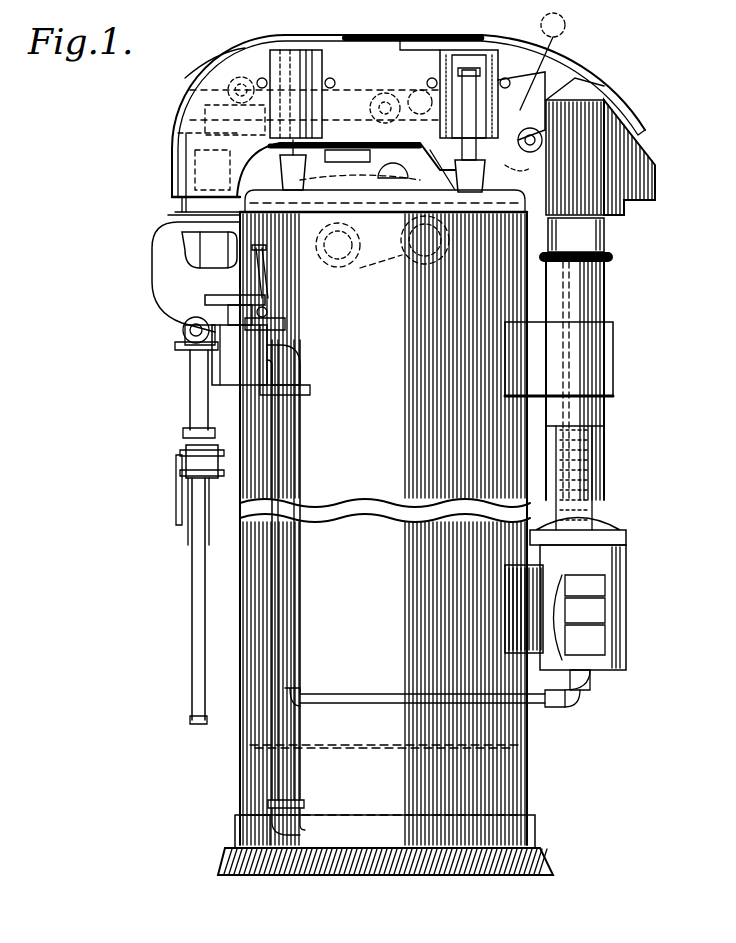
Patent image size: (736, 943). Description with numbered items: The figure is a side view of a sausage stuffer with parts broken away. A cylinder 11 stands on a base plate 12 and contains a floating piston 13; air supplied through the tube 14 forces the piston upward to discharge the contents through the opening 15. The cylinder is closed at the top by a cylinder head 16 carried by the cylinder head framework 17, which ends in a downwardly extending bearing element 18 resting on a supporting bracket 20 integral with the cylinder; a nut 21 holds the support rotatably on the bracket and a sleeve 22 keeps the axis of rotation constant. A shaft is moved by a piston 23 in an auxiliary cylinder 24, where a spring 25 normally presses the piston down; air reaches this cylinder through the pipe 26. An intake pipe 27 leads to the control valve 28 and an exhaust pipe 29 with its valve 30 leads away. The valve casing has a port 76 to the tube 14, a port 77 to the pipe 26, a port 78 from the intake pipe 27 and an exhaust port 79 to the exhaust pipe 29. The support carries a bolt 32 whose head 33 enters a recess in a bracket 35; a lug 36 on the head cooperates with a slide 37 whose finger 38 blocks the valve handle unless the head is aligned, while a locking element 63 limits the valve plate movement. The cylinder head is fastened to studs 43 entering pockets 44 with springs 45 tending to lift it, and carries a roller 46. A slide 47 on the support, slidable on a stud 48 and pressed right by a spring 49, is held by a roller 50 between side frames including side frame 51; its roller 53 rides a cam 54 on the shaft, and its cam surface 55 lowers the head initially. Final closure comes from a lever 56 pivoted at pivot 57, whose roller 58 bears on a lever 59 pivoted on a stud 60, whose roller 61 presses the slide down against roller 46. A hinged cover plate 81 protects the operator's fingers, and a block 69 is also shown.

The cylinder 11 is at (528, 738).
The base plate 12 is at (512, 872).
The floating piston 13 is at (352, 747).
The tube 14 is at (268, 795).
The opening 15 is at (398, 249).
The cylinder head 16 is at (350, 200).
The cylinder head framework 17 is at (180, 92).
The bearing element 18 is at (610, 222).
The supporting bracket 20 is at (610, 372).
The nut 21 is at (612, 255).
The sleeve 22 is at (606, 410).
The piston 23 is at (610, 585).
The auxiliary cylinder 24 is at (612, 635).
The spring 25 is at (600, 580).
The pipe 26 is at (290, 640).
The intake pipe 27 is at (188, 585).
The control valve 28 is at (234, 372).
The exhaust pipe 29 is at (190, 413).
The valve 30 is at (186, 465).
The bolt 32 is at (185, 205).
The head 33 is at (175, 228).
The bracket 35 is at (168, 300).
The lug 36 is at (185, 242).
The slide 37 is at (214, 253).
The finger 38 is at (240, 297).
The studs 43 is at (282, 165).
The pockets 44 is at (500, 52).
The springs 45 is at (490, 80).
The roller 46 is at (408, 175).
The slide 47 is at (347, 159).
The stud 48 is at (186, 130).
The spring 49 is at (212, 169).
The roller 50 is at (543, 61).
The side frame 51 is at (301, 55).
The roller 53 is at (518, 176).
The cam 54 is at (533, 113).
The cam surface 55 is at (345, 192).
The lever 56 is at (428, 42).
The pivot 57 is at (260, 80).
The roller 58 is at (198, 80).
The lever 59 is at (230, 128).
The stud 60 is at (455, 165).
The roller 61 is at (386, 92).
The locking element 63 is at (263, 262).
The block 69 is at (652, 190).
The port 76 is at (270, 355).
The port 77 is at (268, 310).
The port 78 is at (183, 332).
The exhaust port 79 is at (592, 172).
The cover plate 81 is at (580, 62).